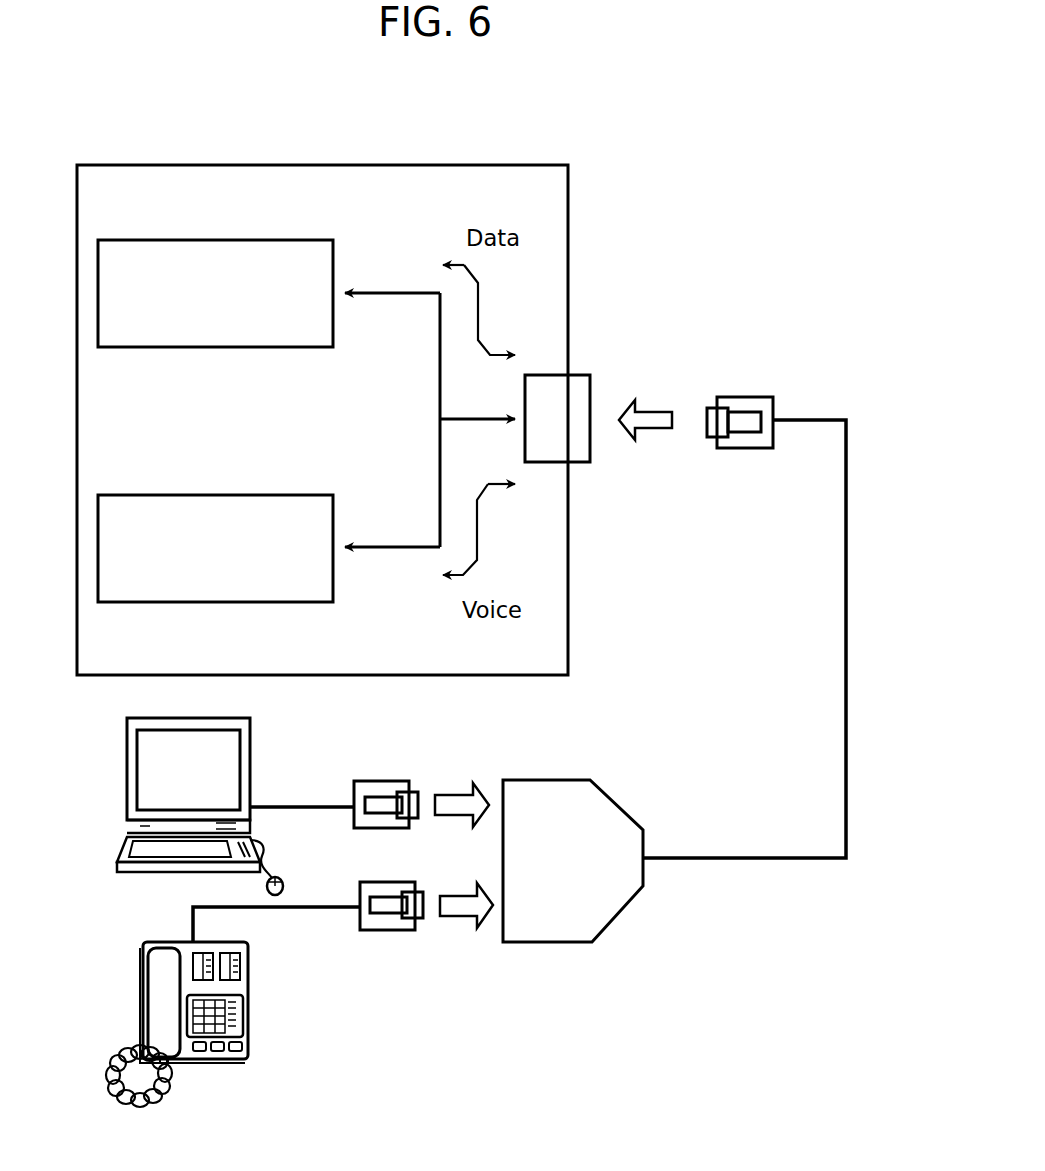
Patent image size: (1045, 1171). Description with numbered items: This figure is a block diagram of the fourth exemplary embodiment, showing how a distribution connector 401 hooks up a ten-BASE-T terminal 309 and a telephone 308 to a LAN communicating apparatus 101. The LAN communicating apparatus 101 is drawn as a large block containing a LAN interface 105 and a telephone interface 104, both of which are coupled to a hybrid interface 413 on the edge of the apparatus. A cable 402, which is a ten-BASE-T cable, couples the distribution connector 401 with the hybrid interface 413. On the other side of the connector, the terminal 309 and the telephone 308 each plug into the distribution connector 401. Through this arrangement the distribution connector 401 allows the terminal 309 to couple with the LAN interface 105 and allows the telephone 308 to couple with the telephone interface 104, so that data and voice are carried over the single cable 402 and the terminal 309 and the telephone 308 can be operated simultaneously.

The LAN communicating apparatus 101 is at (163, 165).
The LAN interface 105 is at (250, 240).
The telephone interface 104 is at (250, 494).
The hybrid interface 413 is at (590, 376).
The cable 402 is at (848, 620).
The distribution connector 401 is at (612, 797).
The 10 BASE-T terminal 309 is at (127, 787).
The telephone 308 is at (137, 990).